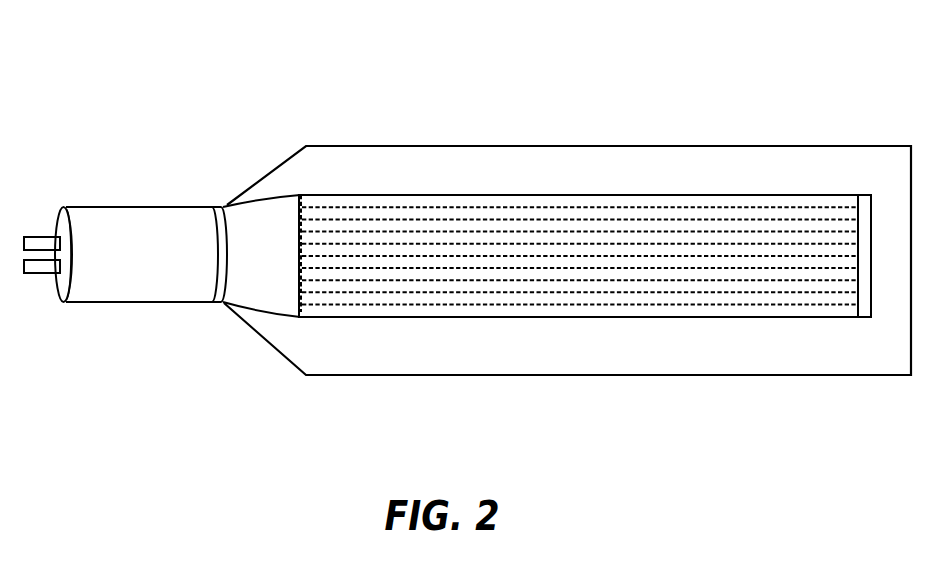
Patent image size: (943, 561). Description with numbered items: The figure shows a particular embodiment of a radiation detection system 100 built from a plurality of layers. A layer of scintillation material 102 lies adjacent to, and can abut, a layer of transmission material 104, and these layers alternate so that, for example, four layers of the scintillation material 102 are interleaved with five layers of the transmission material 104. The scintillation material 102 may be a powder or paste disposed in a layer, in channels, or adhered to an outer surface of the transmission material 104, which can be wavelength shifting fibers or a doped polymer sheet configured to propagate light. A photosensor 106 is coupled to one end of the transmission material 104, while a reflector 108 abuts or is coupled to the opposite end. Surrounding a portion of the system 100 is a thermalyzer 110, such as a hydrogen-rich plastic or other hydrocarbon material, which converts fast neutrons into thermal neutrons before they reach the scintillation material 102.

The radiation detection system 100 is at (660, 86).
The scintillation material 102 is at (526, 300).
The transmission material 104 is at (362, 314).
The photosensor 106 is at (152, 205).
The reflector 108 is at (864, 320).
The thermalyzer 110 is at (417, 144).